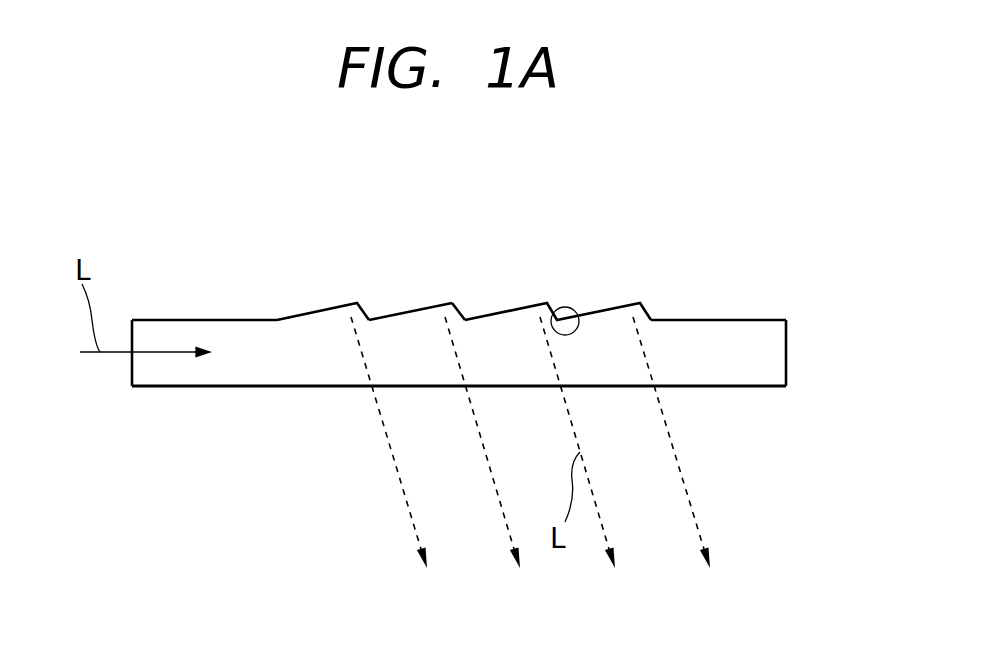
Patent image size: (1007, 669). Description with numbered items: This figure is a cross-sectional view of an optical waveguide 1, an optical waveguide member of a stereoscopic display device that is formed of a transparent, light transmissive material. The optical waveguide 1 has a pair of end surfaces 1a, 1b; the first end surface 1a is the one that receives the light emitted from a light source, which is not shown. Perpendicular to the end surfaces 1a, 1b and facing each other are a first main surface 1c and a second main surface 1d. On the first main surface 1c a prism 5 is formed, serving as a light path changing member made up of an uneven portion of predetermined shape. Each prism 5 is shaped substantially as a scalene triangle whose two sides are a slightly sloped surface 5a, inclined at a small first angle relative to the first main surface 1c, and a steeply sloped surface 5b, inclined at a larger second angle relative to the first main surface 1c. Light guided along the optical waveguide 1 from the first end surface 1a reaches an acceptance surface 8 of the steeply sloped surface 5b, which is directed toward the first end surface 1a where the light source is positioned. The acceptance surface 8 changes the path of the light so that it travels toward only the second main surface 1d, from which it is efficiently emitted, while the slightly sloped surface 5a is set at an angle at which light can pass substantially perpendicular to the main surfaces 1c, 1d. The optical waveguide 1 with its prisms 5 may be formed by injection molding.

The optical waveguide 1 is at (460, 289).
The first end surface 1a is at (131, 366).
The second end surface 1b is at (786, 346).
The first main surface 1c is at (725, 319).
The second main surface 1d is at (730, 387).
The prism 5 is at (464, 253).
The slightly sloped surface 5a is at (410, 310).
The steeply sloped surface 5b is at (463, 314).
The acceptance surface 8 is at (582, 319).